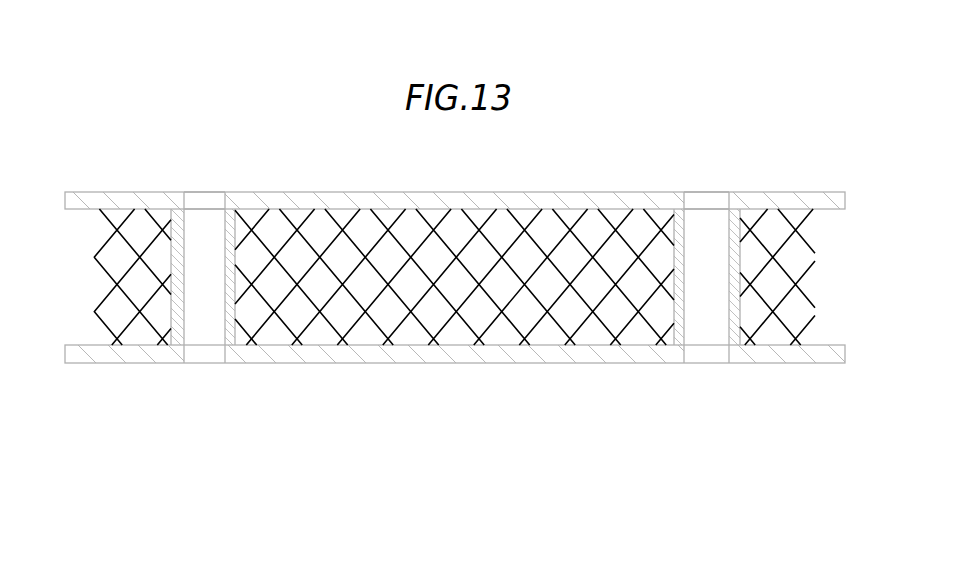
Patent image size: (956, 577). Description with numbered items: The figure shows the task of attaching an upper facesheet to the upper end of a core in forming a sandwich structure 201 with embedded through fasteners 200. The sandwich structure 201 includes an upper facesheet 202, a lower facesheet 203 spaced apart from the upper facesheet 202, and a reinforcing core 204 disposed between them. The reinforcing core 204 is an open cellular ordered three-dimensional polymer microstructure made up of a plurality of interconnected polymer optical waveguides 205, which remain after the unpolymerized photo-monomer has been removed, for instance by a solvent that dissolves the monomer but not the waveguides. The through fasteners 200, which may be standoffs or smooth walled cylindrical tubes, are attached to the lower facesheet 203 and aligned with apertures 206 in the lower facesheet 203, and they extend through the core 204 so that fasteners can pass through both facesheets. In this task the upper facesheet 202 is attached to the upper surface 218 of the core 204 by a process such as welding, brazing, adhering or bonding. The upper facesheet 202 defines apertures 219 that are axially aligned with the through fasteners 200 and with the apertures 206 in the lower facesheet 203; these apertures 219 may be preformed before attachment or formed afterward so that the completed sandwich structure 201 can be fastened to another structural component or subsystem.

The through fastener 200 is at (177, 321).
The sandwich structure 201 is at (331, 136).
The upper facesheet 202 is at (514, 205).
The lower facesheet 203 is at (484, 352).
The reinforcing core 204 is at (545, 355).
The polymer optical waveguides 205 is at (269, 330).
The apertures in the lower facesheet 206 is at (201, 350).
The upper surface of the core 218 is at (427, 200).
The apertures in the upper facesheet 219 is at (205, 197).